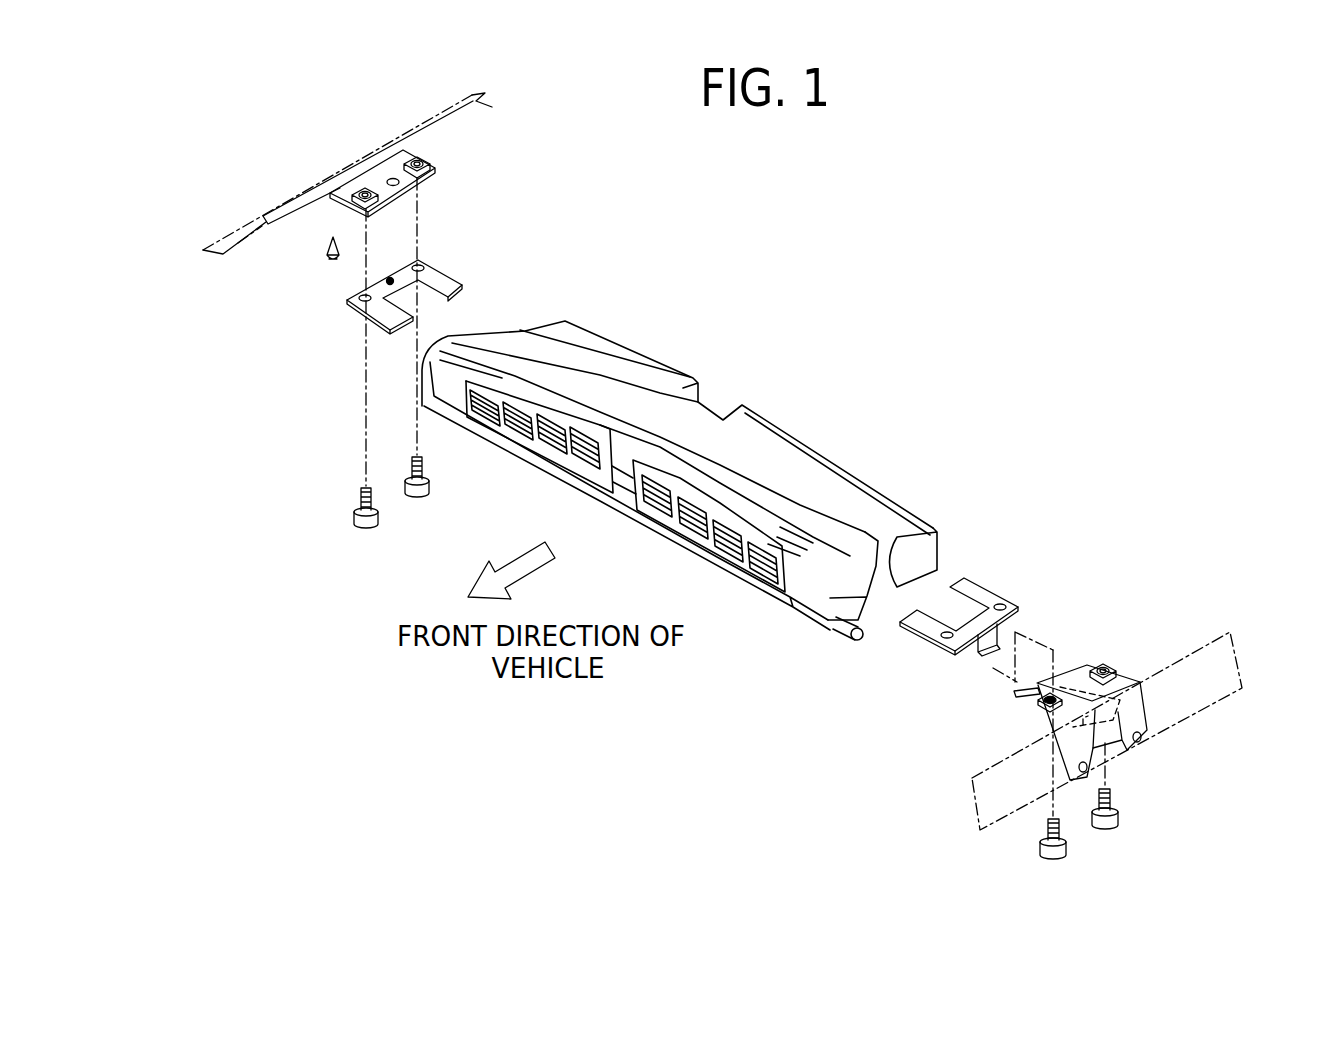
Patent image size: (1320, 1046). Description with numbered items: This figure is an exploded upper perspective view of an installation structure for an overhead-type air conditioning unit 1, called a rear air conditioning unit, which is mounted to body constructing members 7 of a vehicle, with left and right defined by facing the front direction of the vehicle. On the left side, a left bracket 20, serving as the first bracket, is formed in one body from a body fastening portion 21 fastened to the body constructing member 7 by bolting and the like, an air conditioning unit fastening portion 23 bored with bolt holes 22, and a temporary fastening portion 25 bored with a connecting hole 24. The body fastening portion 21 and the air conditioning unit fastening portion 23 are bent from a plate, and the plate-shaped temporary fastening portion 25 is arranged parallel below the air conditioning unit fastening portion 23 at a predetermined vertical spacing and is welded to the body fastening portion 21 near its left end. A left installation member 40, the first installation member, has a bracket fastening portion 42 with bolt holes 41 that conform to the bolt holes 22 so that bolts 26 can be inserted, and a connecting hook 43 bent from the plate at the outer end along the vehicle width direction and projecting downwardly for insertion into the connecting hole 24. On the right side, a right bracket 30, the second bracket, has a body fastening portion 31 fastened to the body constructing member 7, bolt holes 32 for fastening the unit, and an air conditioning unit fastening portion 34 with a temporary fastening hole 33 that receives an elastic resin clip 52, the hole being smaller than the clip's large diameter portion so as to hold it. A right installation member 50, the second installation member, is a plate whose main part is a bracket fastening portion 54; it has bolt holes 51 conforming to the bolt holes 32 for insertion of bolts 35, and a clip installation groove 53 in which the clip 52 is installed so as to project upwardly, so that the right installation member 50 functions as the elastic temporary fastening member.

The overhead-type air conditioning unit 1 is at (657, 383).
The body constructing member 7 is at (492, 107).
The left bracket 20 is at (1062, 720).
The body fastening portion 21 is at (1128, 712).
The bolt holes 22 is at (1103, 663).
The air conditioning unit fastening portion 23 is at (1115, 678).
The connecting hole 24 is at (1051, 692).
The temporary fastening portion 25 is at (1020, 690).
The bolts 26 is at (1119, 826).
The right bracket 30 is at (388, 322).
The body fastening portion 31 is at (335, 183).
The bolt holes 32 is at (422, 160).
The temporary fastening hole 33 is at (416, 186).
The air conditioning unit fastening portion 34 is at (405, 156).
The bolts 35 is at (432, 497).
The left installation member 40 is at (971, 587).
The bolt holes 41 is at (990, 598).
The bracket fastening portion 42 is at (1003, 603).
The connecting hook 43 is at (973, 648).
The right installation member 50 is at (442, 290).
The bolt holes 51 is at (423, 266).
The resin clip 52 is at (332, 260).
The clip installation groove 53 is at (390, 278).
The bracket fastening portion 54 is at (441, 280).